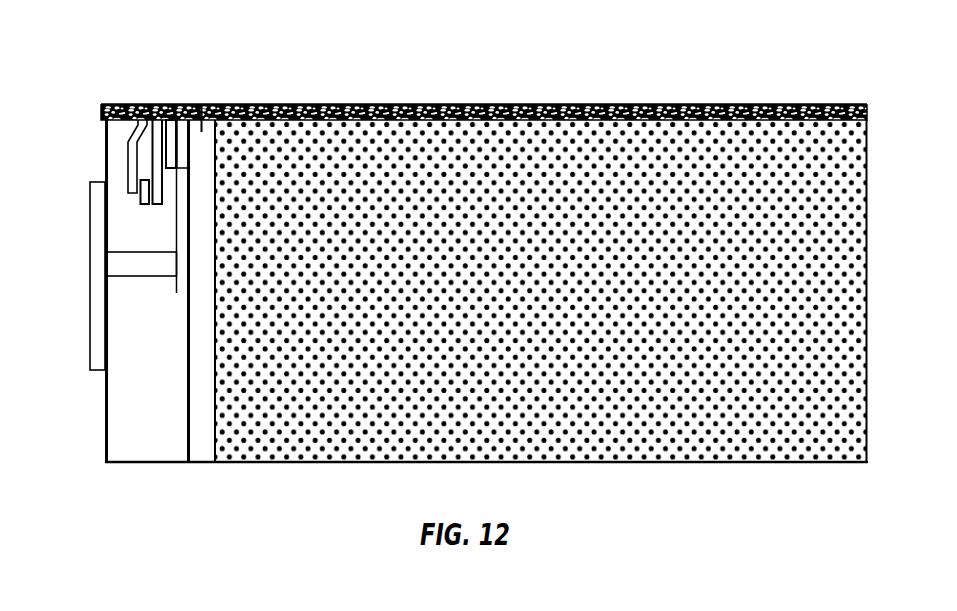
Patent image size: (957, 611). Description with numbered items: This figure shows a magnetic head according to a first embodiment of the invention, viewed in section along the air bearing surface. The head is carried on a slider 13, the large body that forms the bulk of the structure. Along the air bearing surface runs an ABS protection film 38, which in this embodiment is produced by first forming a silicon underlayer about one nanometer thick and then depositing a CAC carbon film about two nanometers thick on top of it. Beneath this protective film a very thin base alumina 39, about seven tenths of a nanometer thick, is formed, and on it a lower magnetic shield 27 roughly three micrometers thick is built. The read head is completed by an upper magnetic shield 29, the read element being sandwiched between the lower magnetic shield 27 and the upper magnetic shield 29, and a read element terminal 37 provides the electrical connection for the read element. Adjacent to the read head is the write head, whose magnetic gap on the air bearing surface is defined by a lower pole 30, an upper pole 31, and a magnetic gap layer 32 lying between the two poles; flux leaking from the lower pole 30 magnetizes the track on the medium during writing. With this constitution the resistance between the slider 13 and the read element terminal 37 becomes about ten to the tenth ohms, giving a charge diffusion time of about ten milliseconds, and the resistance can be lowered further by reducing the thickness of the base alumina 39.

The slider 13 is at (662, 463).
The lower magnetic shield 27 is at (183, 104).
The upper magnetic shield 29 is at (173, 104).
The lower pole 30 is at (157, 104).
The upper pole 31 is at (143, 104).
The magnetic gap layer 32 is at (140, 276).
The read element terminal 37 is at (97, 245).
The ABS protection film 38 is at (697, 105).
The base alumina 39 is at (203, 104).